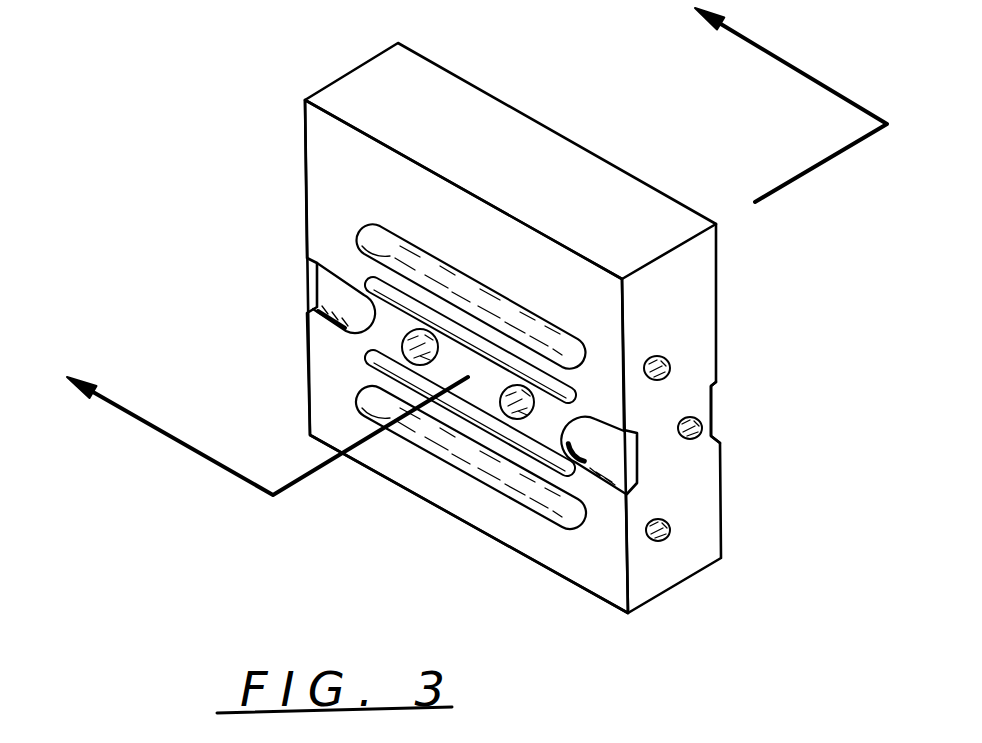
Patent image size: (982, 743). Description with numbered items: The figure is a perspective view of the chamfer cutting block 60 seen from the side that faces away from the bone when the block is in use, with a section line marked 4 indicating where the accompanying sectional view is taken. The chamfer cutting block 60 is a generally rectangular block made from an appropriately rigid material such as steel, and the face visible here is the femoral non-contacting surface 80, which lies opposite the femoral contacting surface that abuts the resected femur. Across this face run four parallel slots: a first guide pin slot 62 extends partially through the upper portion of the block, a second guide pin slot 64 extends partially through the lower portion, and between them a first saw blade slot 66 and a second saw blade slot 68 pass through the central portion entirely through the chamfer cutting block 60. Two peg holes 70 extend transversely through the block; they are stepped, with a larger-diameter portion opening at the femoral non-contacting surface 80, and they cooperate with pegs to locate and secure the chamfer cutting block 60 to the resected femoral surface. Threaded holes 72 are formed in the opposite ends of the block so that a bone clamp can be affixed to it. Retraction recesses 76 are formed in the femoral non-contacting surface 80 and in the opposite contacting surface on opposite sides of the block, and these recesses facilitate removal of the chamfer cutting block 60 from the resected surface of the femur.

The section line 4- 4 is at (466, 247).
The chamfer cutting block 60 is at (349, 67).
The first guide pin slot 62 is at (358, 240).
The second guide pin slot 64 is at (377, 419).
The first saw blade slot 66 is at (378, 372).
The second saw blade slot 68 is at (370, 296).
The peg holes 70 is at (524, 418).
The threaded holes 72 is at (658, 382).
The retraction recesses 76 is at (328, 298).
The femoral non-contacting surface 80 is at (507, 258).